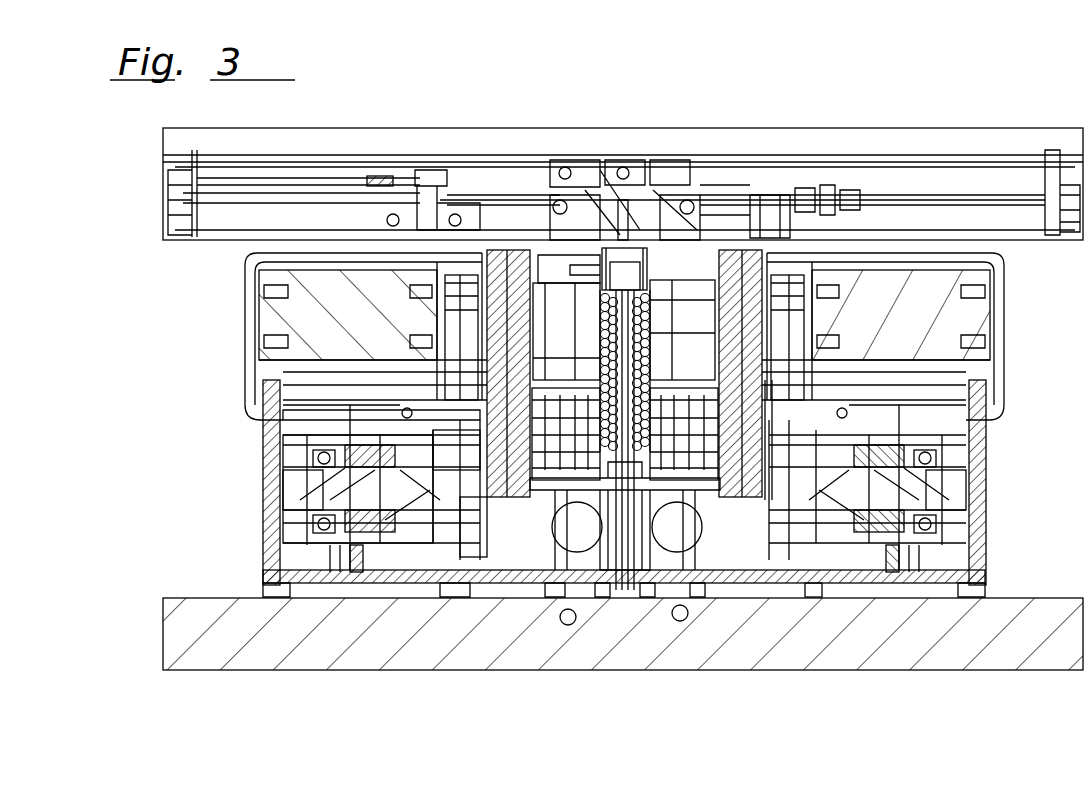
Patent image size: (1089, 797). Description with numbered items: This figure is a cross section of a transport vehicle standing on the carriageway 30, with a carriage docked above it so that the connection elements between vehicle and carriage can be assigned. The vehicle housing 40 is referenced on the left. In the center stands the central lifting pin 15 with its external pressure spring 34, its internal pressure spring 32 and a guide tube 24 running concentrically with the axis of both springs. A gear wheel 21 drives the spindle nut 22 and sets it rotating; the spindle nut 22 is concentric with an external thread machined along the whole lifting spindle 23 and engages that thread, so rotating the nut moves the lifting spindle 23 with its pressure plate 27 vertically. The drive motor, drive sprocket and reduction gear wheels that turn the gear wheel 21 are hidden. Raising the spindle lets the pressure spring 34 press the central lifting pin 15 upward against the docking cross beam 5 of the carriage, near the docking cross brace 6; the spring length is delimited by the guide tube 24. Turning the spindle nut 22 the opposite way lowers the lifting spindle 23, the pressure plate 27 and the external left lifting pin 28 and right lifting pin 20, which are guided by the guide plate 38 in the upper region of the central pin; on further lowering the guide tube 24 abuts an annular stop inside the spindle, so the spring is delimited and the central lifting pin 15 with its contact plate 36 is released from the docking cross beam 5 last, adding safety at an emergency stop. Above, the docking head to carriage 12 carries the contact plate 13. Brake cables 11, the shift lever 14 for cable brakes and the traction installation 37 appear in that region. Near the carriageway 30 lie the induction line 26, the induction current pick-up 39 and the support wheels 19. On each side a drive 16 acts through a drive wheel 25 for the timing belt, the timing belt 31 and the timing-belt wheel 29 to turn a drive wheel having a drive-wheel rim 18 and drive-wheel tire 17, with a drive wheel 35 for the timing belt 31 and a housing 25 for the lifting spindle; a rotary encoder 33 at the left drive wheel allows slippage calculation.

The docking cross beam 5 is at (1030, 241).
The docking cross brace 6 is at (770, 215).
The brake cables 11 is at (922, 198).
The docking head to carriage 12 is at (598, 248).
The contact plate of the carriage 13 is at (627, 240).
The shift lever for cable brakes 14 is at (685, 195).
The central lifting pin 15 is at (775, 300).
The drive for a drive wheel 16 is at (945, 352).
The drive wheel tire 17 is at (967, 386).
The drive wheel rim 18 is at (990, 433).
The support wheel 19 is at (813, 590).
The right lifting pin 20 is at (745, 470).
The gear wheel for driving the spindle nut 21 is at (672, 480).
The spindle nut 22 is at (653, 455).
The lifting spindle 23 is at (645, 440).
The guide tube 24 is at (632, 440).
The housing for the lifting spindle 25 is at (582, 530).
The induction lines 26 is at (566, 598).
The pressure plate 27 is at (540, 400).
The left lifting pin 28 is at (535, 370).
The timing-belt drive 29 is at (470, 540).
The carriageway 30 is at (395, 638).
The timing belt 31 is at (455, 410).
The internal pressure spring 32 is at (460, 405).
The rotary encoder 33 is at (545, 382).
The external pressure spring 34 is at (598, 368).
The drive wheel for the timing belt 35 is at (470, 328).
The contact plate of lifting pin 36 is at (472, 284).
The traction installation 37 is at (511, 290).
The guide plate 38 is at (557, 265).
The induction current pick-up 39 is at (560, 583).
The vehicle housing 40 is at (475, 270).